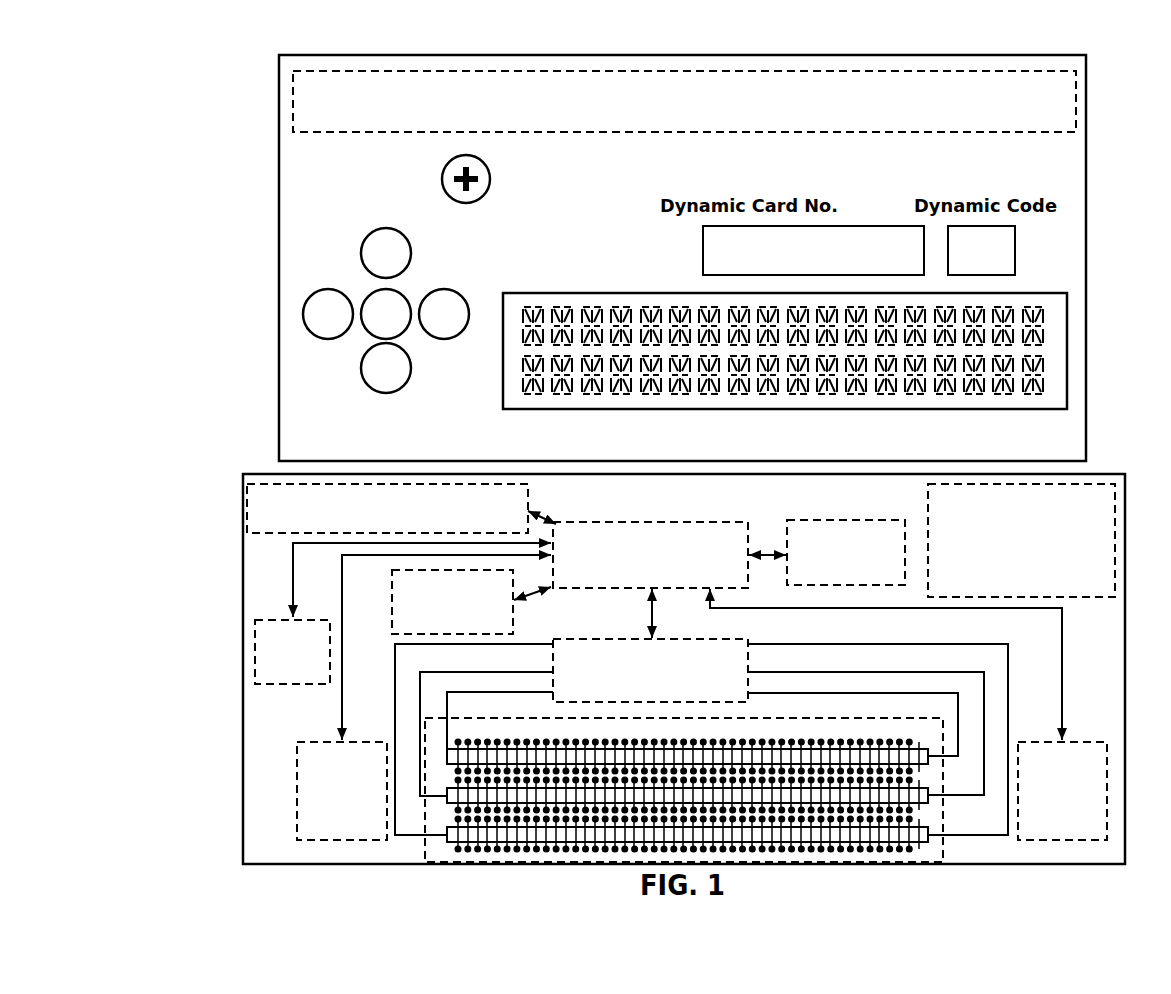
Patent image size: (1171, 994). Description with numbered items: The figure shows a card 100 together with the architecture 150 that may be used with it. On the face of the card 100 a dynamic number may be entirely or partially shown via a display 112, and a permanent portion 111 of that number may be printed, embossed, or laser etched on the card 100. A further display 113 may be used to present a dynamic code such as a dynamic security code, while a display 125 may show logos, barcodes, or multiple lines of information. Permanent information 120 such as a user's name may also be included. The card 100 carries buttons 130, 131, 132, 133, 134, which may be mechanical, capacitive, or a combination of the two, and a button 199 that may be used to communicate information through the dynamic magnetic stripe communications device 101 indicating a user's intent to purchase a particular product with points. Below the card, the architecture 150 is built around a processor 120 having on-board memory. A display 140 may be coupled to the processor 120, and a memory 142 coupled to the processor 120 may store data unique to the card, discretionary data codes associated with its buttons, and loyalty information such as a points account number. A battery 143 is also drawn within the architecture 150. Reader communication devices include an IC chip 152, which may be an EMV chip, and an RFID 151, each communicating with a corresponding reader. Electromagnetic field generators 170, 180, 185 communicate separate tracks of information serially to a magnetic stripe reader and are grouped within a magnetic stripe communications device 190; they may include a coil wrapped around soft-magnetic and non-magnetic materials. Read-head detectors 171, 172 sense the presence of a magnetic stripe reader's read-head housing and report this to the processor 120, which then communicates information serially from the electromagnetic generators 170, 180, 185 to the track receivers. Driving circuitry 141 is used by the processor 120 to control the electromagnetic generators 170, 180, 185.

The card 100 is at (659, 258).
The dynamic magnetic stripe communications device 101 is at (665, 101).
The permanent portion 111 is at (609, 256).
The display 112 is at (813, 259).
The display 113 is at (977, 259).
The processor 120 is at (517, 499).
The display 125 is at (785, 363).
The button 130 is at (375, 304).
The button 131 is at (320, 296).
The button 132 is at (451, 304).
The button 133 is at (391, 241).
The button 134 is at (365, 368).
The display 140 is at (828, 543).
The driving circuitry 141 is at (644, 659).
The memory 142 is at (361, 504).
The battery 143 is at (1021, 540).
The architecture 150 is at (663, 669).
The RFID 151 is at (435, 602).
The IC chip 152 is at (287, 641).
The electromagnetic field generator 170 is at (687, 746).
The read-head detector 171 is at (331, 779).
The read-head detector 172 is at (1039, 791).
The electromagnetic field generator 180 is at (662, 790).
The electromagnetic field generator 185 is at (662, 830).
The dynamic magnetic stripe communications device 190 is at (684, 778).
The button 199 is at (708, 169).